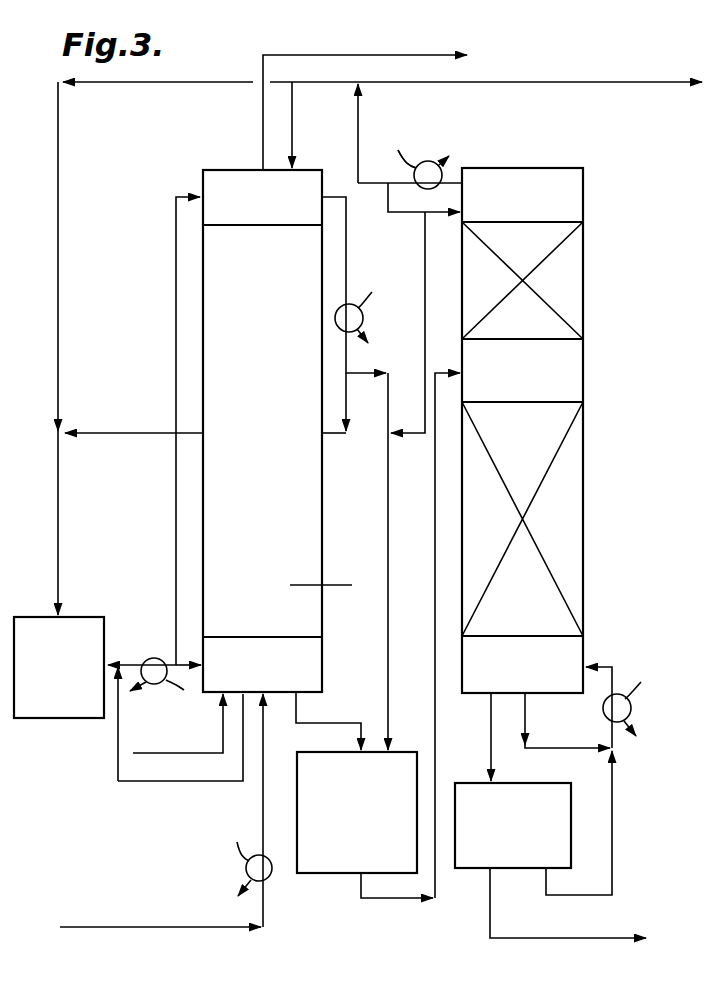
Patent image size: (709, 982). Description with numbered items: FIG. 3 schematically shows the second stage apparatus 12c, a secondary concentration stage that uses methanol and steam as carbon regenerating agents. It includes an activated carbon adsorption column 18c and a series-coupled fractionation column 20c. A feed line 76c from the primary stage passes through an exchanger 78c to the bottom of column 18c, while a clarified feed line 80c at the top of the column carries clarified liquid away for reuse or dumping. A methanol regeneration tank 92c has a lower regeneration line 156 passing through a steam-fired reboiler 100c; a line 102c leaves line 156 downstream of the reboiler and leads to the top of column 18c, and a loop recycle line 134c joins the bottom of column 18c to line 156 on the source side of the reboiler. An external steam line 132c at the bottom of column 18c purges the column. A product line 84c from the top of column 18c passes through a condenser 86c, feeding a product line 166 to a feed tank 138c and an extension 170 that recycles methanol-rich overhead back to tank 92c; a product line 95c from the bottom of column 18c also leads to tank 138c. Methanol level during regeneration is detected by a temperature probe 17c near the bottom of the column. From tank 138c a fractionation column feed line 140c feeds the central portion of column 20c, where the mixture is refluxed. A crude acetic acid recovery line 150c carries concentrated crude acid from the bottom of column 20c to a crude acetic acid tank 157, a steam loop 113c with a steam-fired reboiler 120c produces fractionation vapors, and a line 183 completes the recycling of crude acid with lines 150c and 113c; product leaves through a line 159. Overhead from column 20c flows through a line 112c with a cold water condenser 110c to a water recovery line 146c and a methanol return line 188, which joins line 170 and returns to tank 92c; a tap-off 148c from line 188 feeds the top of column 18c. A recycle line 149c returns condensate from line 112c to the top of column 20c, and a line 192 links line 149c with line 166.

The second stage apparatus 12c is at (614, 163).
The temperature probe 17c is at (328, 585).
The activated carbon adsorption column 18c is at (203, 178).
The fractionation column 20c is at (583, 208).
The feed line 76c is at (104, 927).
The exchanger 78c is at (246, 868).
The clarified feed line 80c is at (440, 51).
The product line 84c is at (329, 197).
The condenser 86c is at (363, 318).
The methanol regeneration tank 92c is at (80, 617).
The product line 95c is at (310, 723).
The steam-fired reboiler 100c is at (154, 658).
The line 102c is at (176, 508).
The cold water condenser 110c is at (414, 175).
The line 112c is at (452, 182).
The steam loop 113c is at (548, 748).
The steam-fired reboiler 120c is at (632, 711).
The external steam line 132c is at (133, 753).
The loop recycle line 134c is at (158, 782).
The feed tank 138c is at (333, 874).
The fractionation column feed line 140c is at (435, 620).
The water recovery line 146c is at (544, 86).
The tap-off 148c is at (292, 128).
The recycle line 149c is at (388, 212).
The crude acetic acid recovery line 150c is at (490, 737).
The regeneration line 156 is at (110, 664).
The crude acetic acid tank 157 is at (530, 783).
The line 159 is at (532, 938).
The product line 166 is at (388, 548).
The extension 170 is at (105, 433).
The line 183 is at (612, 828).
The methanol return line 188 is at (163, 82).
The line 192 is at (425, 352).